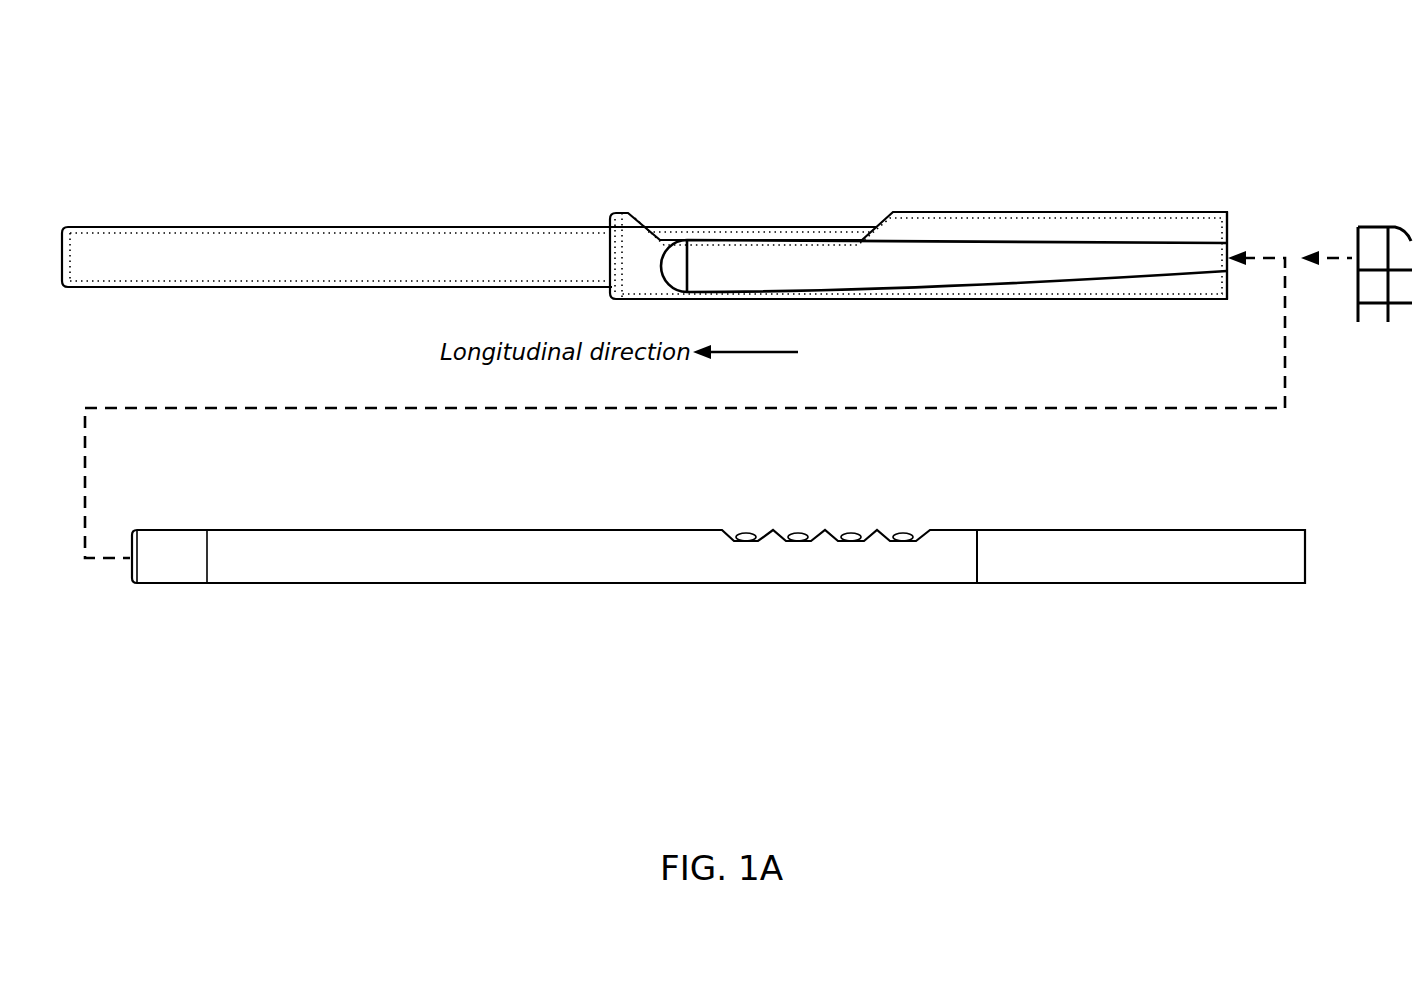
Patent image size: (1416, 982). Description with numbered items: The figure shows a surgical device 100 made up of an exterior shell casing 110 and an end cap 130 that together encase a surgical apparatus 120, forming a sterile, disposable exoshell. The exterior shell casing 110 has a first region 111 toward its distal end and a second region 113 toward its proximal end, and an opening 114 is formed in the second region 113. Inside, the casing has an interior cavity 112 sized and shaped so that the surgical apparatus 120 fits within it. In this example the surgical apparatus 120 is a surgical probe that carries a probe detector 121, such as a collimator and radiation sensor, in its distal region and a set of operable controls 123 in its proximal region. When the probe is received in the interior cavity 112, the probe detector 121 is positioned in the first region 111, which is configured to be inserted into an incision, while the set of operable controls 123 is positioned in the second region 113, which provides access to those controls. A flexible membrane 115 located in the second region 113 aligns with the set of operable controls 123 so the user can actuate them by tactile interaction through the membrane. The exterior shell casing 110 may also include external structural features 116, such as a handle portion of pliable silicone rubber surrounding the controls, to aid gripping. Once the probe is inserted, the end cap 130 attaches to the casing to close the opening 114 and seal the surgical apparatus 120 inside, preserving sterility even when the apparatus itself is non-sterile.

The surgical device 100 is at (186, 124).
The exterior shell casing 110 is at (1060, 176).
The first region 111 is at (308, 226).
The interior cavity 112 is at (423, 255).
The second region 113 is at (937, 208).
The opening 114 is at (1225, 240).
The flexible membrane 115 is at (703, 222).
The external structural features 116 is at (941, 258).
The surgical apparatus 120 is at (1060, 498).
The probe detector 121 is at (168, 530).
The set of operable controls 123 is at (797, 532).
The end cap 130 is at (1370, 192).